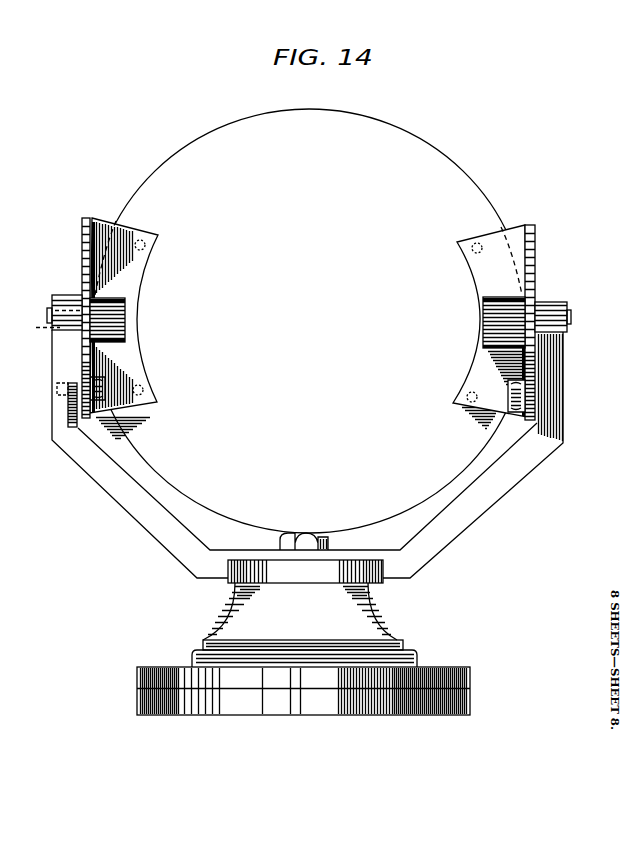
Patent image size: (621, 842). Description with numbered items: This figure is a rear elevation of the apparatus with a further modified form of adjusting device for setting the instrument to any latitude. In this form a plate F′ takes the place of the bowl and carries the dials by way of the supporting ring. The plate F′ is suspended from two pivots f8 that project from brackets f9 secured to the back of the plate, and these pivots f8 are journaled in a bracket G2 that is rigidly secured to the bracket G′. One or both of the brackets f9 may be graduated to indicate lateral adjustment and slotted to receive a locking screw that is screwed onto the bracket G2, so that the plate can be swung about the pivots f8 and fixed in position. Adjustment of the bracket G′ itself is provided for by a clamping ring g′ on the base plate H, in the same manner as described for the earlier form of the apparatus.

The plate F′ is at (309, 321).
The brackets f9 is at (88, 242).
The pivots f8 is at (47, 325).
The bracket G2 is at (120, 483).
The bracket G′ is at (300, 600).
The clamping ring g′ is at (393, 658).
The base plate H is at (470, 702).